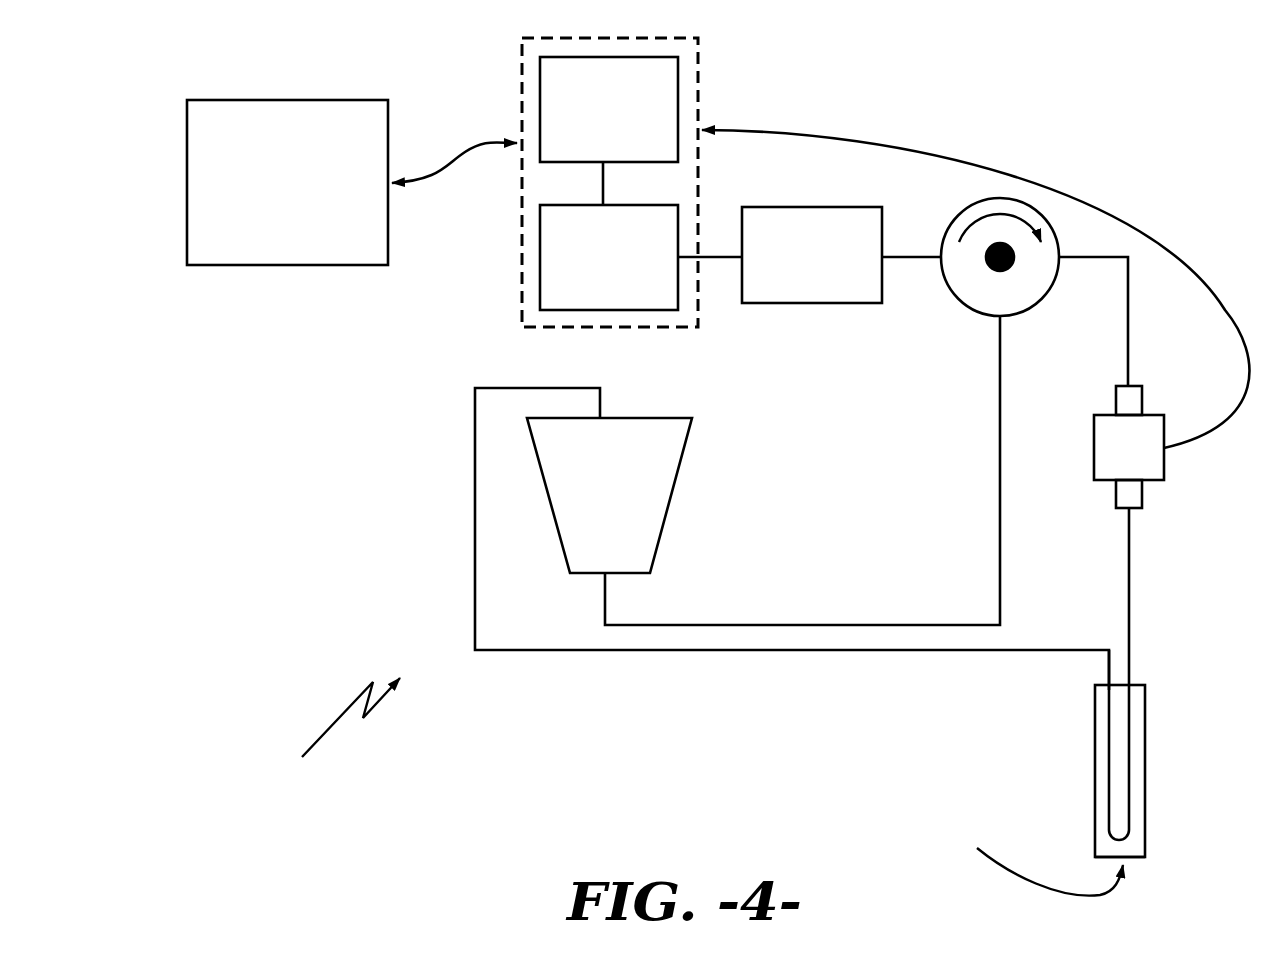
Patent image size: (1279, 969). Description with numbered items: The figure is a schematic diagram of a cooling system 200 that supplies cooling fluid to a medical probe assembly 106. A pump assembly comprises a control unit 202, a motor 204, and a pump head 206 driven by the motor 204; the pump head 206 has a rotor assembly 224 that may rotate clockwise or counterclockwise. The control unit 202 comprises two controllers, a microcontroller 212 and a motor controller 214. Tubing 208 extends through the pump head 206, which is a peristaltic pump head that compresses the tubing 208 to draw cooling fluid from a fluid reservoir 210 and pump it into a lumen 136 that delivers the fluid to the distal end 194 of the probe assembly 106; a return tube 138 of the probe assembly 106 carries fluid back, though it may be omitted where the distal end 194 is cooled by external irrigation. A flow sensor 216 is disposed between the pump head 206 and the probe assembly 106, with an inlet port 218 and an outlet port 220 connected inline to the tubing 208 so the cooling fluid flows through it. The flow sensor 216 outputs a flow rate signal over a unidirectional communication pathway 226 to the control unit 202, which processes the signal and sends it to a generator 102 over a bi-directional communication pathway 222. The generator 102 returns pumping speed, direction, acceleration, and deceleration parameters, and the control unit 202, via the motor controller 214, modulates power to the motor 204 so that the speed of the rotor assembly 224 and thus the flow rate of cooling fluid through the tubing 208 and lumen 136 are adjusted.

The generator 102 is at (262, 203).
The control unit 202 is at (698, 88).
The microcontroller 212 is at (583, 132).
The motor controller 214 is at (583, 280).
The motor 204 is at (786, 277).
The pump head 206 is at (972, 307).
The rotor assembly 224 is at (988, 258).
The communication pathway 226 is at (985, 147).
The flow sensor 216 is at (1094, 452).
The inlet port 218 is at (1116, 400).
The outlet port 220 is at (1142, 497).
The fluid reservoir 210 is at (583, 512).
The tubing 208 is at (788, 623).
The bi-directional communication pathway 222 is at (482, 140).
The lumen 136 is at (1133, 765).
The return tube 138 is at (1109, 785).
The probe assembly 106 is at (1145, 817).
The distal end 194 is at (1029, 854).
The cooling system 200 is at (327, 738).